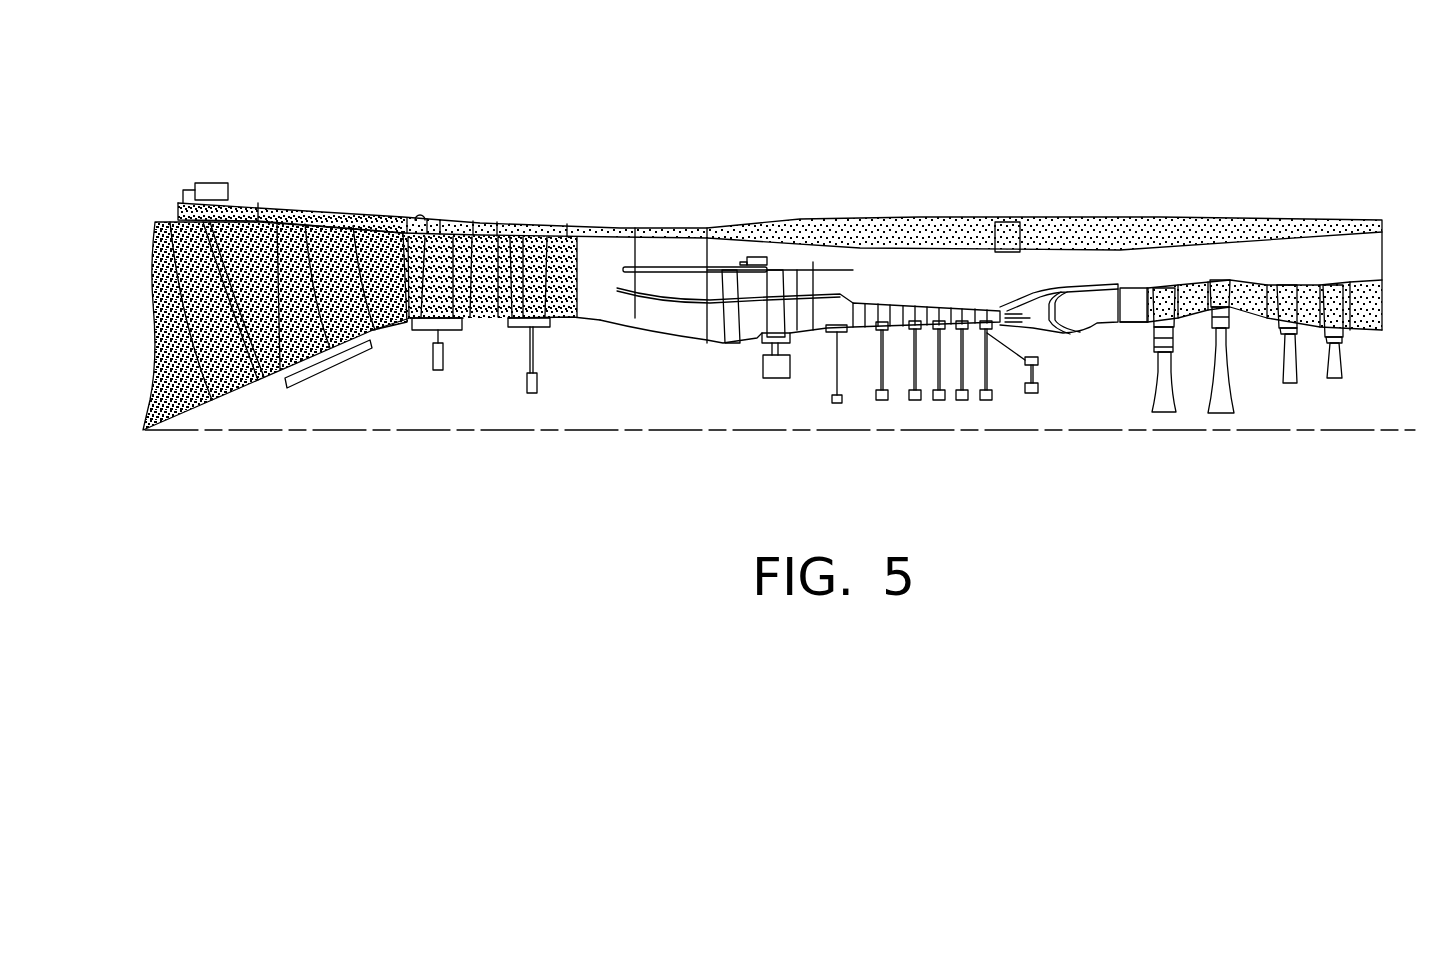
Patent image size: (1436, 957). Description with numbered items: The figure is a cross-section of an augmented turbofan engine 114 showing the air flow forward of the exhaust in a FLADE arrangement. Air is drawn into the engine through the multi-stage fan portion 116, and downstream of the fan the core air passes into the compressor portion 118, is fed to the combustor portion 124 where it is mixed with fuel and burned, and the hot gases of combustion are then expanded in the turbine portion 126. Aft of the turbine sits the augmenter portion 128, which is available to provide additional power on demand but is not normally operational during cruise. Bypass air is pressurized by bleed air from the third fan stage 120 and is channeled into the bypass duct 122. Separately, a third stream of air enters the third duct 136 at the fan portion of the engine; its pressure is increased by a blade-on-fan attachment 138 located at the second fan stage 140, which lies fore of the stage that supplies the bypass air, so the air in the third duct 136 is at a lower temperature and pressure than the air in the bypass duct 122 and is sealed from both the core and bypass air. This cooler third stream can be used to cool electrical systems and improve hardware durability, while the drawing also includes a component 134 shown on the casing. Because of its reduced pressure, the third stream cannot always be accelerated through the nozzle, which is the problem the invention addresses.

The engine 114 is at (432, 64).
The fan portion 116 is at (243, 392).
The compressor portion 118 is at (837, 363).
The third fan stage 120 is at (550, 318).
The bypass duct 122 is at (878, 270).
The combustor portion 124 is at (1090, 335).
The turbine portion 126 is at (1248, 317).
The augmenter portion 128 is at (1397, 305).
The sensor unit 134 is at (1010, 222).
The third duct 136 is at (533, 228).
The blade-on-fan attachment 138 is at (437, 225).
The second fan stage 140 is at (400, 222).